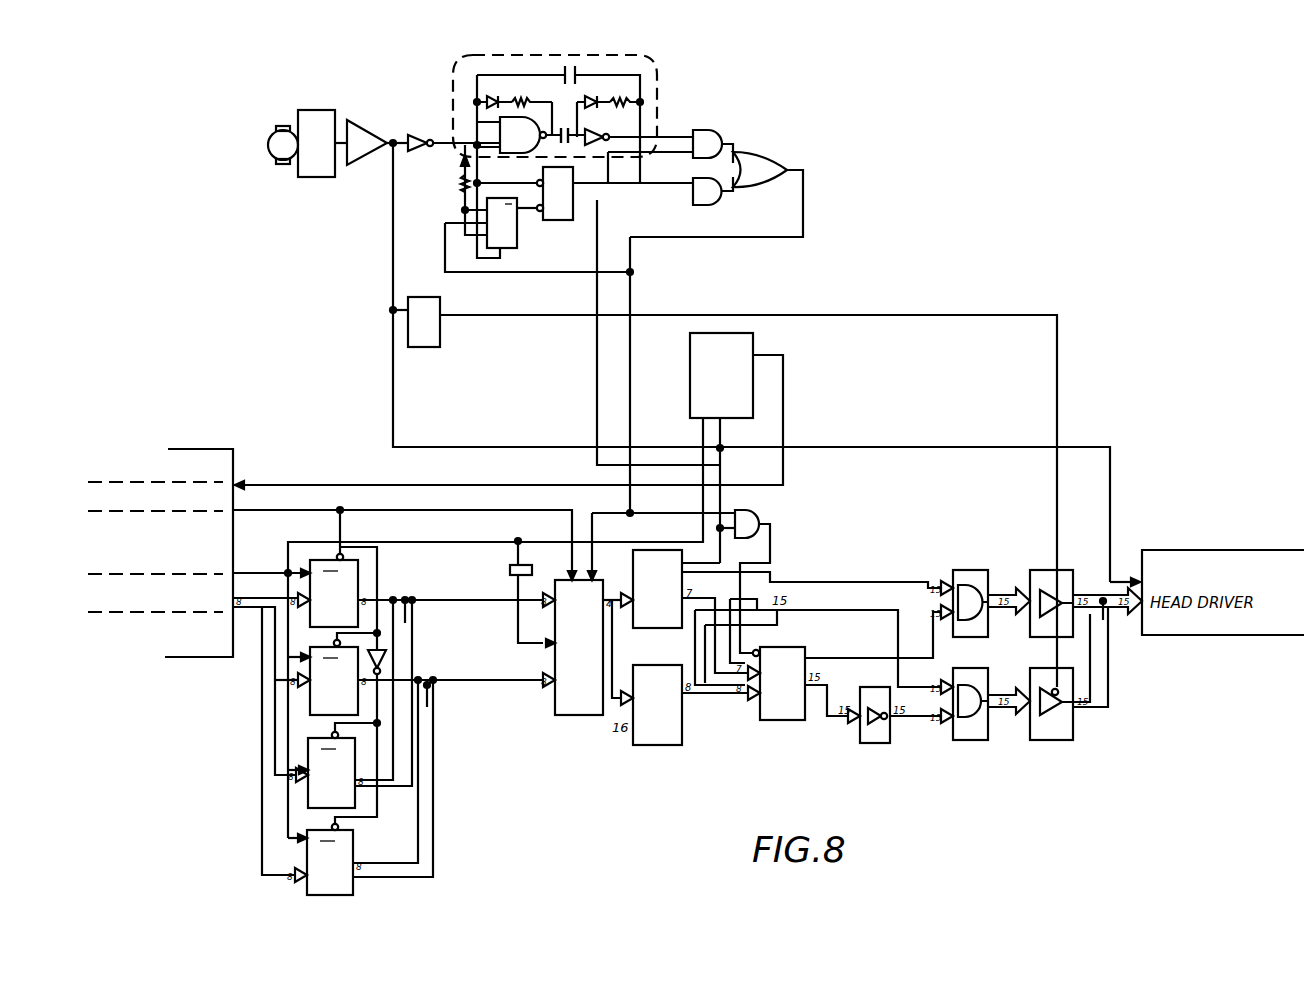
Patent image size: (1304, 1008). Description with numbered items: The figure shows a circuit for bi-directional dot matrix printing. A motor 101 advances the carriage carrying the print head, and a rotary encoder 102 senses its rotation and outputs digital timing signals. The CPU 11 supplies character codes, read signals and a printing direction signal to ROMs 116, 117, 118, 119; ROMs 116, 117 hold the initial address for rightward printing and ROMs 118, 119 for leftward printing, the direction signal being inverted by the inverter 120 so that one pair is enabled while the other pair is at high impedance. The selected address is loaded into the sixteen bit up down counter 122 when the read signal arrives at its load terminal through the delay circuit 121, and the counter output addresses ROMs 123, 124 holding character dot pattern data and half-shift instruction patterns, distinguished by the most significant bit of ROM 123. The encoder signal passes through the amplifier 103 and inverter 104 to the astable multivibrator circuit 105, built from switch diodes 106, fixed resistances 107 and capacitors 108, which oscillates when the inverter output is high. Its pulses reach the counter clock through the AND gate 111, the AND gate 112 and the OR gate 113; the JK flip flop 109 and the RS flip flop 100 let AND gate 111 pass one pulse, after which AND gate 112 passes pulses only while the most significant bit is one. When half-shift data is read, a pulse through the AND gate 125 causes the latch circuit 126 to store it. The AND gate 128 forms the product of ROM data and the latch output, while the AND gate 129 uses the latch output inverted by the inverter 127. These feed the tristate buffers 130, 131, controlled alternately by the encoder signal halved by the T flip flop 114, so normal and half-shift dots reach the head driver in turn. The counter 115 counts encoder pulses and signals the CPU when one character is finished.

The CPU 11 is at (200, 449).
The RS flip-flop 100 is at (570, 220).
The motor 101 is at (268, 153).
The rotary encoder 102 is at (317, 110).
The amplifier 103 is at (355, 165).
The inverter 104 is at (418, 134).
The astable multivibrator circuit 105 is at (657, 98).
The switch diodes 106 is at (491, 94).
The fixed resistances 107 is at (521, 95).
The capacitors 108 is at (562, 124).
The JK flip flop 109 is at (517, 251).
The AND gate 111 is at (722, 143).
The AND gate 112 is at (717, 204).
The OR gate 113 is at (790, 165).
The T flip flop 114 is at (433, 348).
The counter 115 is at (690, 358).
The ROM 116 is at (360, 583).
The ROM 117 is at (318, 648).
The ROM 118 is at (316, 743).
The ROM 119 is at (345, 895).
The inverter 120 is at (388, 659).
The delay circuit 121 is at (510, 570).
The 16 bit up down counter 122 is at (592, 718).
The ROM 123 is at (650, 629).
The ROM 124 is at (655, 748).
The AND gate 125 is at (760, 515).
The latch circuit 126 is at (790, 722).
The inverter 127 is at (880, 745).
The AND gate 128 is at (986, 570).
The AND gate 129 is at (975, 742).
The tristate buffer 130 is at (1066, 577).
The tristate buffer 131 is at (1058, 742).